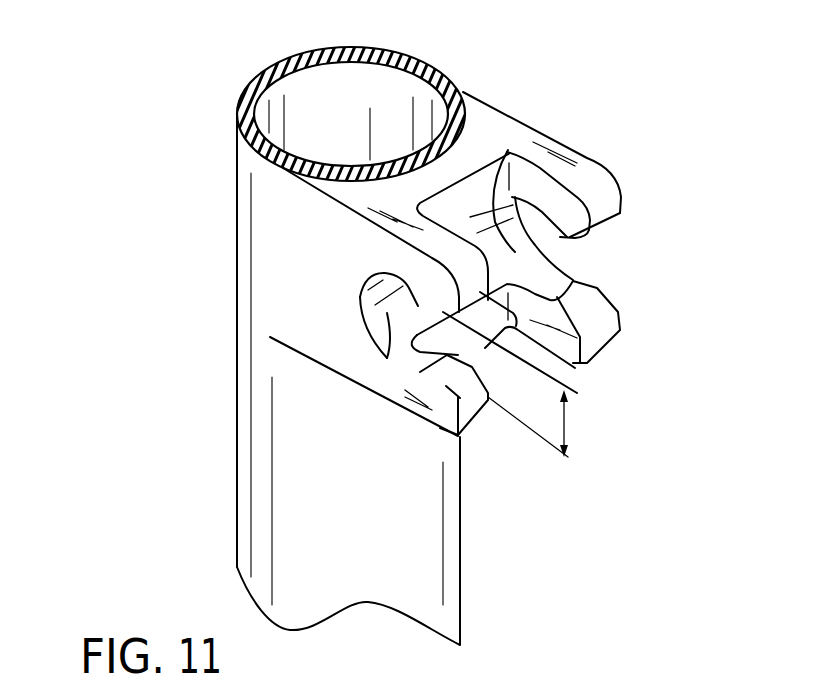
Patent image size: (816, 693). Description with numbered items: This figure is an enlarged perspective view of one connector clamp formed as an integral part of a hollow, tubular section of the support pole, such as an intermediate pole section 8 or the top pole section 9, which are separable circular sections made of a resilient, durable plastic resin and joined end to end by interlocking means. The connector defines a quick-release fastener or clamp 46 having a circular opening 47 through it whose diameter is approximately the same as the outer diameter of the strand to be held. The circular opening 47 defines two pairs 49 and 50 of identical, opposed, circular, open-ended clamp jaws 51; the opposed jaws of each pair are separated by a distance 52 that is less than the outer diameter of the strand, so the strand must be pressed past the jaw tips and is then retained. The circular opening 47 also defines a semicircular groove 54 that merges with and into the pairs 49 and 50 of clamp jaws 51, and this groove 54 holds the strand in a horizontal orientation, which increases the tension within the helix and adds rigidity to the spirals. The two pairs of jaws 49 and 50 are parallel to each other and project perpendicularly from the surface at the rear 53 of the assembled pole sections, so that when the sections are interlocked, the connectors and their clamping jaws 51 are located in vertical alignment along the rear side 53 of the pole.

The intermediate pole section 8 is at (237, 295).
The top pole section 9 is at (348, 471).
The quick-release fastener or clamp 46 is at (238, 83).
The circular opening 47 is at (385, 360).
The first pair of clamp jaws 49 is at (438, 418).
The second pair of clamp jaws 50 is at (615, 346).
The clamp jaw 51 is at (508, 152).
The jaw separation distance 52 is at (566, 425).
The rear surface of the pole 53 is at (243, 543).
The semicircular groove 54 is at (523, 247).